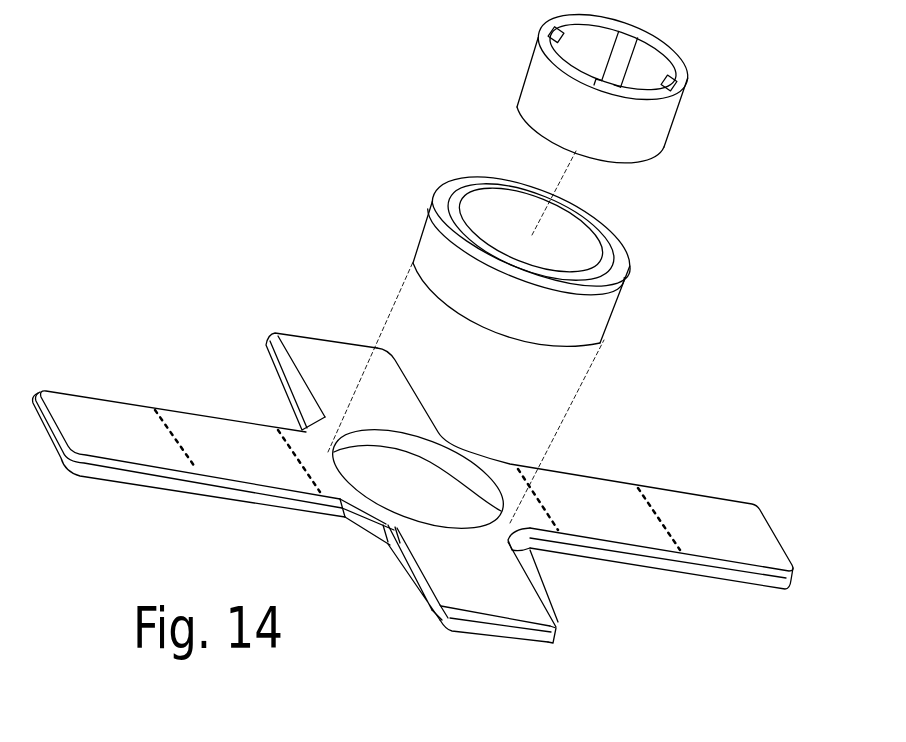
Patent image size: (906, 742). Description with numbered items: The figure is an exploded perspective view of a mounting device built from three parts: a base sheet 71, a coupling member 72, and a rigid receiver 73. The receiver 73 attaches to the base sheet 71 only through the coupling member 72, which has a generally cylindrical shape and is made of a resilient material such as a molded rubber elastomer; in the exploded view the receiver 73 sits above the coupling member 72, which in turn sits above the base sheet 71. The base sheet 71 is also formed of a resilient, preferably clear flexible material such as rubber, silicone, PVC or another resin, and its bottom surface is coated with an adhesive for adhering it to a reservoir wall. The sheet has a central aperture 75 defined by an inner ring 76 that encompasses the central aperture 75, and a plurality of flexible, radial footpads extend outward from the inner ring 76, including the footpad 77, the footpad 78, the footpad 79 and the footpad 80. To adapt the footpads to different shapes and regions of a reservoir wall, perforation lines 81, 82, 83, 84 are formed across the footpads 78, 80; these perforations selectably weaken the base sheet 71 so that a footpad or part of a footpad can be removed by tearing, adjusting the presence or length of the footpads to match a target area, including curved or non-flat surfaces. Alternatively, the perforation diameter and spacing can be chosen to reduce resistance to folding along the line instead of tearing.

The base sheet 71 is at (101, 398).
The coupling member 72 is at (434, 202).
The rigid receiver 73 is at (528, 63).
The central aperture 75 is at (449, 492).
The inner ring 76 is at (377, 510).
The footpad 77 is at (322, 348).
The footpad 78 is at (600, 500).
The footpad 79 is at (508, 592).
The footpad 80 is at (222, 428).
The perforation line 81 is at (180, 457).
The perforation line 82 is at (305, 480).
The perforation line 83 is at (540, 498).
The perforation line 84 is at (653, 508).